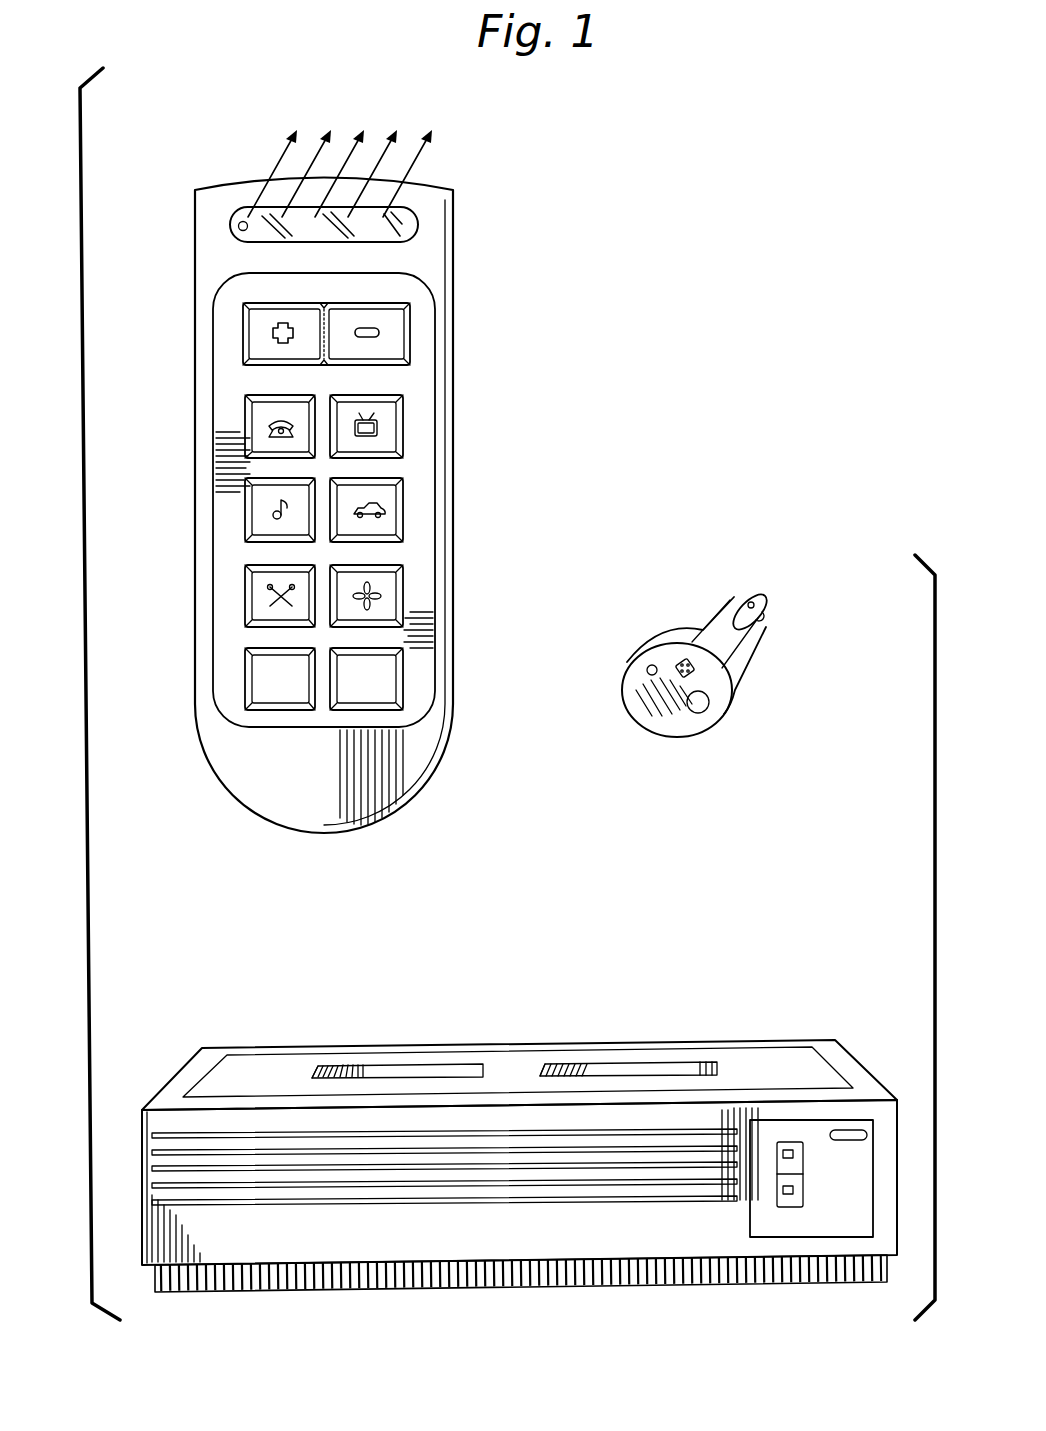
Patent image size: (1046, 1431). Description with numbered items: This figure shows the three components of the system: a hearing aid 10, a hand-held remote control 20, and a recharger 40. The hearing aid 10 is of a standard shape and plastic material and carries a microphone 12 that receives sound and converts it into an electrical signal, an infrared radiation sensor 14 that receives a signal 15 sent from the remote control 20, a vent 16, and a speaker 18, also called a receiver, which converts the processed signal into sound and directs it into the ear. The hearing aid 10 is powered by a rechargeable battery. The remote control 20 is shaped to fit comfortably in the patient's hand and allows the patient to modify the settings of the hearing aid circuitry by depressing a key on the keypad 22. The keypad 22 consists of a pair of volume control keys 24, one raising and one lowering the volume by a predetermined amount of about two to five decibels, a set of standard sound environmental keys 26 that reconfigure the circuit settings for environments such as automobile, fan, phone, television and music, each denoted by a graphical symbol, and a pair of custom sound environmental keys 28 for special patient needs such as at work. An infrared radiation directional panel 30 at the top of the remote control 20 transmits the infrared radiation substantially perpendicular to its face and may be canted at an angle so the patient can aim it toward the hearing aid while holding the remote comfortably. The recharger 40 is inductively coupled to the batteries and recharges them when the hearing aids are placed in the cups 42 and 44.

The hearing aid 10 is at (770, 520).
The microphone 12 is at (647, 670).
The infrared radiation sensor 14 is at (681, 661).
The vent 16 is at (701, 713).
The speaker 18 is at (754, 606).
The remote control 20 is at (221, 166).
The signal 15 is at (413, 160).
The keypad 22 is at (213, 408).
The volume control keys 24 is at (303, 303).
The standard sound environmental keys 26 is at (300, 395).
The custom sound environmental keys 28 is at (350, 714).
The infrared radiation directional panel 30 is at (418, 207).
The recharger 40 is at (343, 1028).
The cup 42 is at (450, 1070).
The cup 44 is at (637, 1067).